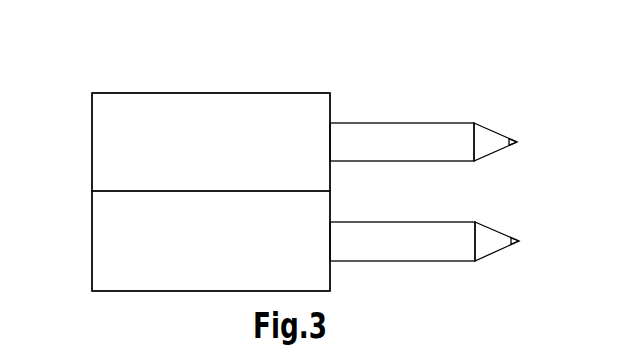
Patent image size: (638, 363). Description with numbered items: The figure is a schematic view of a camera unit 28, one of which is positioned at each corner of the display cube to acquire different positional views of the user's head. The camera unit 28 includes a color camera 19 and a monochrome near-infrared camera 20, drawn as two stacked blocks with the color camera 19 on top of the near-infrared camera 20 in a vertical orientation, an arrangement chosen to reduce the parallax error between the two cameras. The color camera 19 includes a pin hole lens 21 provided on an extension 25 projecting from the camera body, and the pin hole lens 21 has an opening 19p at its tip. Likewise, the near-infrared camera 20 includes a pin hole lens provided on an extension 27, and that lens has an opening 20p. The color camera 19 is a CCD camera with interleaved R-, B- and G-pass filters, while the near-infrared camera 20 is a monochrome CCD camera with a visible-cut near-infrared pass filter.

The camera unit 28 is at (147, 80).
The color camera 19 is at (92, 170).
The near-infrared camera 20 is at (92, 263).
The extension 25 is at (420, 123).
The extension 27 is at (380, 262).
The pin hole lens 21 is at (488, 130).
The opening 19p is at (517, 142).
The opening 20p is at (520, 240).